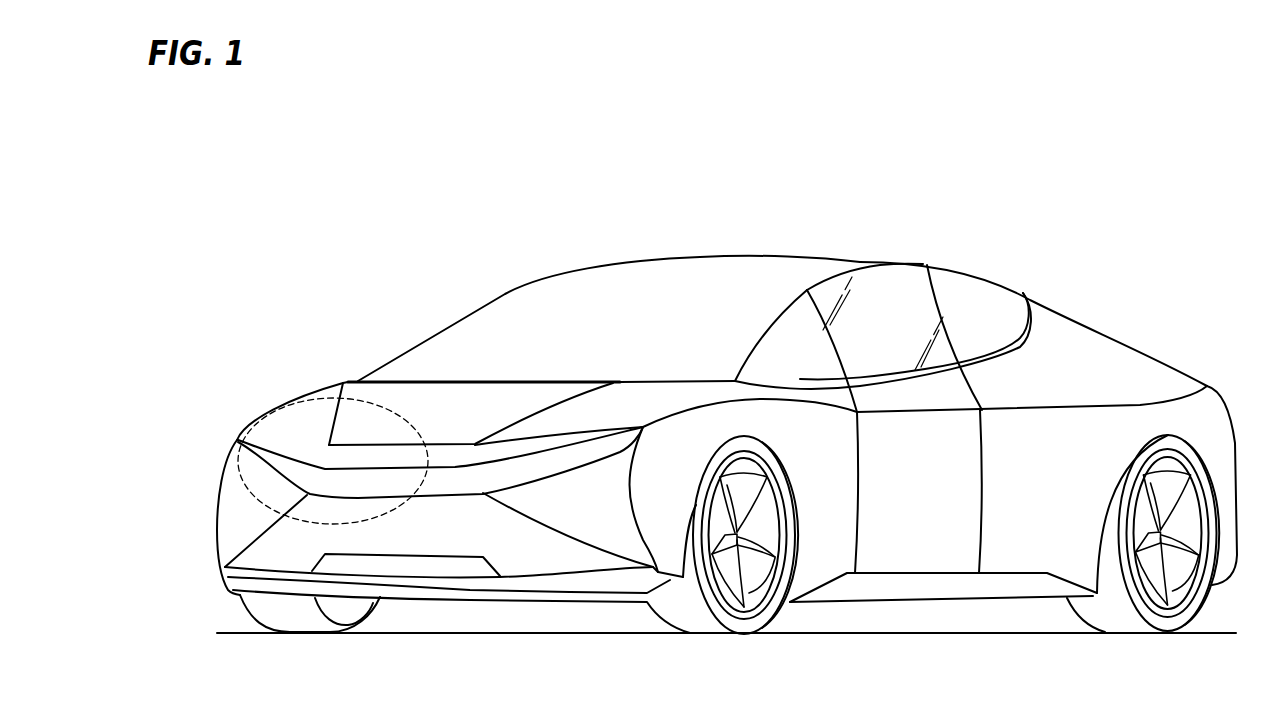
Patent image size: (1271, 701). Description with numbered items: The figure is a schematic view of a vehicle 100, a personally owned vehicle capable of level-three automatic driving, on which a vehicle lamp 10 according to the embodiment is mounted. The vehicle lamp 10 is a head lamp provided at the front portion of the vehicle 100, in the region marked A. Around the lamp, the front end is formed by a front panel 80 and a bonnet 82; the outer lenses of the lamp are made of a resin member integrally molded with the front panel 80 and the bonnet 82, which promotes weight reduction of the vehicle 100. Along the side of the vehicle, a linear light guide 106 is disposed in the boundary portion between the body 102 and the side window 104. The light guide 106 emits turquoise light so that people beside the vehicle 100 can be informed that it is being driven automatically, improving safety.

The vehicle 100 is at (397, 230).
The body 102 is at (1065, 332).
The side window 104 is at (865, 282).
The light guide 106 is at (905, 370).
The vehicle lamp 10 is at (467, 443).
The bonnet 82 is at (437, 400).
The front panel 80 is at (460, 535).
The headlamp region A is at (373, 403).